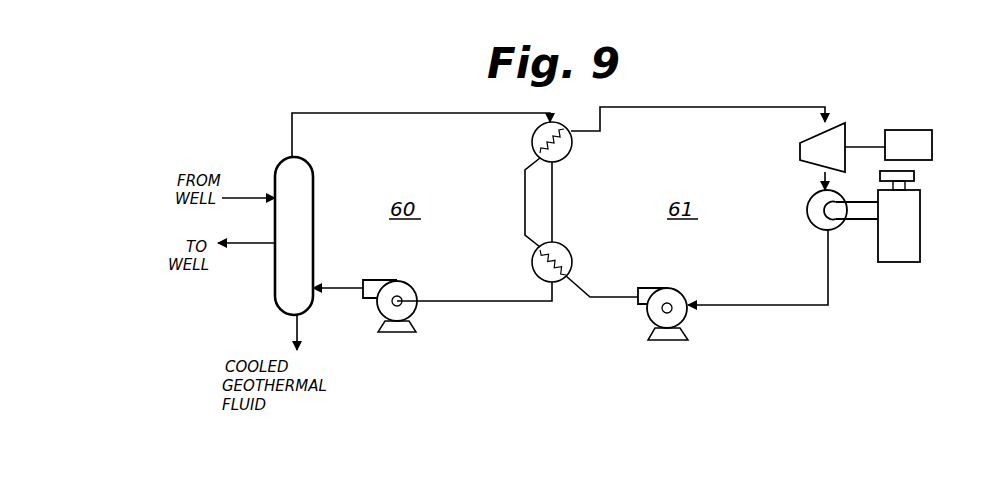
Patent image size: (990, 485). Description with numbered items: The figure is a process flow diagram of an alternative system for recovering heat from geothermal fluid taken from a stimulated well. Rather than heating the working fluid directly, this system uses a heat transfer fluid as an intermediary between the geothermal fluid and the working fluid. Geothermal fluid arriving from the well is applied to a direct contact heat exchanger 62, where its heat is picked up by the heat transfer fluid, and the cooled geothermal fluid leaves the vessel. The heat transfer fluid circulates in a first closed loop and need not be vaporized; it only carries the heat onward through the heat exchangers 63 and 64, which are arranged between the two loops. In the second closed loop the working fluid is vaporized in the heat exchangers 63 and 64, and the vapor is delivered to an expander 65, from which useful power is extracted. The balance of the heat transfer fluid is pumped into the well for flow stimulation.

The direct contact heat exchanger 62 is at (313, 166).
The heat exchanger 63 is at (566, 156).
The heat exchanger 64 is at (568, 250).
The expander 65 is at (840, 122).